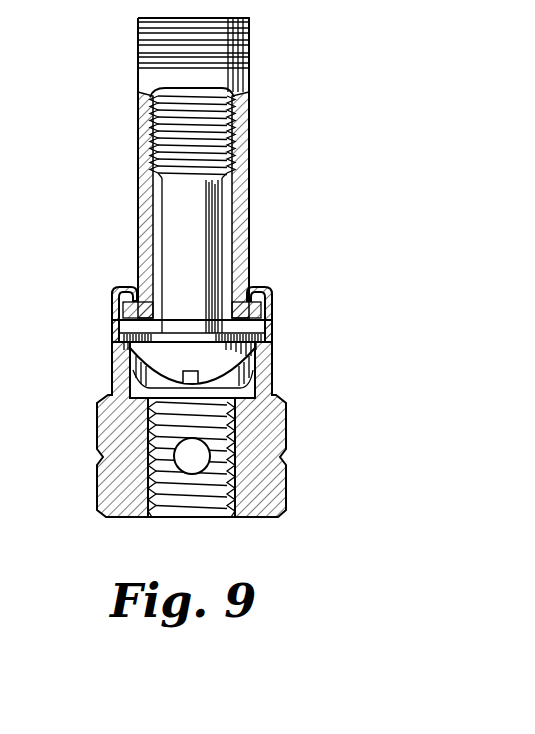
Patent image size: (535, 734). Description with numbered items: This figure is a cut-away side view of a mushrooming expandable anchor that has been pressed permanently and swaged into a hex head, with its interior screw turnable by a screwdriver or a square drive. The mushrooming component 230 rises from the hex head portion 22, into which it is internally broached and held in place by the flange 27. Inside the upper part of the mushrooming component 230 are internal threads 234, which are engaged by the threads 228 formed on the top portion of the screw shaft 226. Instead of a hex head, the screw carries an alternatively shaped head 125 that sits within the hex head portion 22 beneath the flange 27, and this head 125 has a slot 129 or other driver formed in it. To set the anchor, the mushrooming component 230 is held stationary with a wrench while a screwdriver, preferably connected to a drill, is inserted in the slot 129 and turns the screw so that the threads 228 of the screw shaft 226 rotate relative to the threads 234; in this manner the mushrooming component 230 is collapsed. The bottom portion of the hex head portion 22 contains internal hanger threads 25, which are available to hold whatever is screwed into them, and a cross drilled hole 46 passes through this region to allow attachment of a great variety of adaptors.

The hex head portion 22 is at (285, 478).
The internal hanger threads 25 is at (179, 498).
The flange 27 is at (112, 305).
The cross drilled hole 46 is at (192, 475).
The alternatively shaped head 125 is at (150, 390).
The slot 129 is at (242, 390).
The screw shaft 226 is at (172, 248).
The threads 228 is at (185, 176).
The mushrooming component 230 is at (249, 212).
The threads 234 is at (198, 90).